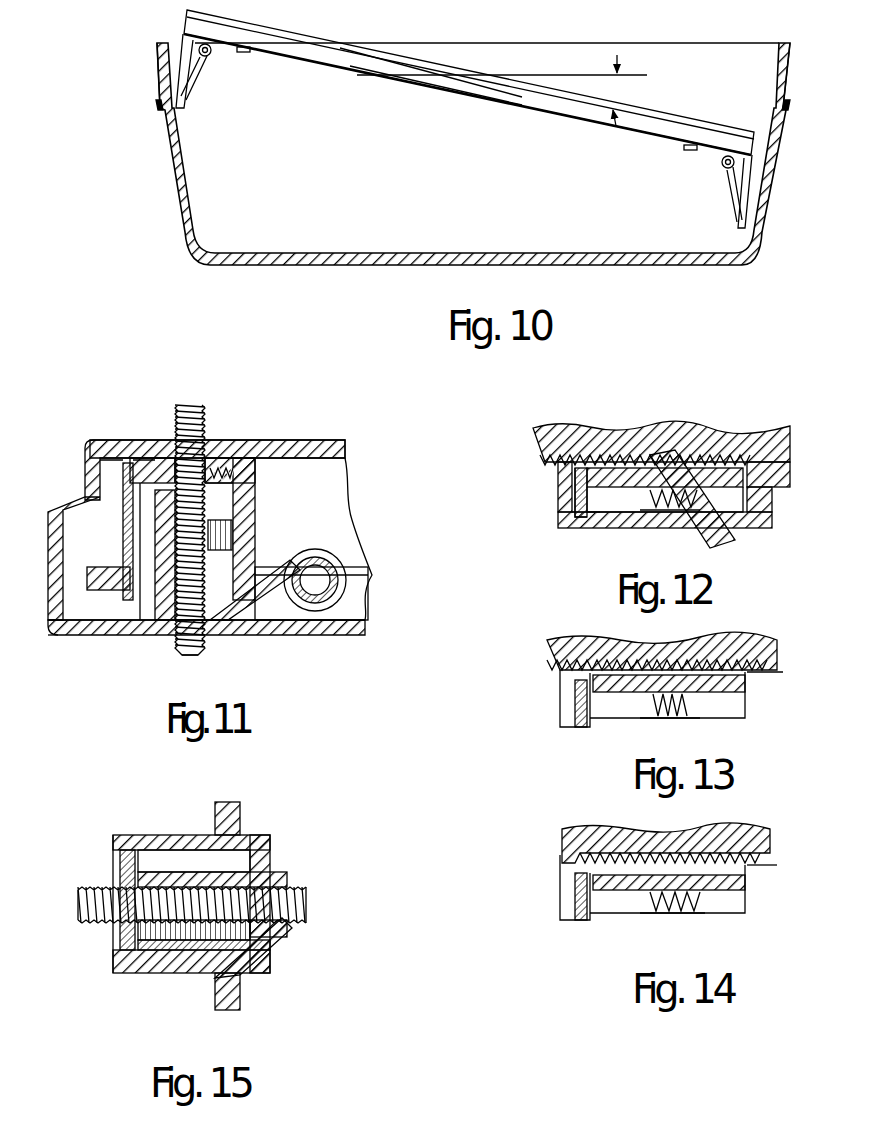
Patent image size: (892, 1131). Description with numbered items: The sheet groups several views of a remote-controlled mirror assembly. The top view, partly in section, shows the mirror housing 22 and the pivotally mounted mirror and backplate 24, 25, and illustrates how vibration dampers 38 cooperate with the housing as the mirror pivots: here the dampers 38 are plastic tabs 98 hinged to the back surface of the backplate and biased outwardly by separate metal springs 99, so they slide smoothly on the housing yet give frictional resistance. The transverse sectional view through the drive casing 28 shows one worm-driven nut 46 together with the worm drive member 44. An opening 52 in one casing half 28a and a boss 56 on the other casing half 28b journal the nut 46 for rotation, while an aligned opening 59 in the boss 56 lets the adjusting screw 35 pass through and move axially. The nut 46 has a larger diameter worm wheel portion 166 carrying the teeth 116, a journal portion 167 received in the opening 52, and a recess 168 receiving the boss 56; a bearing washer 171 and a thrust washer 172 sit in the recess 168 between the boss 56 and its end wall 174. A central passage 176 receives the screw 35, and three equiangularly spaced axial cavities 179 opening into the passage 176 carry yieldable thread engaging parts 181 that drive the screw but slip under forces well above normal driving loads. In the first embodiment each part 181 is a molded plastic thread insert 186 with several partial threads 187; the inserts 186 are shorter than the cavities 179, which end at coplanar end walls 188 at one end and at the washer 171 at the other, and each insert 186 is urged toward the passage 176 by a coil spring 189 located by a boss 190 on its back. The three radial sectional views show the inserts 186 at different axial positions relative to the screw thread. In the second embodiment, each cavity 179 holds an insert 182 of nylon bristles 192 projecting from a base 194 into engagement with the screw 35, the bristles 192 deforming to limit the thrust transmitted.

In FIG. 10, the container body 22 is at (708, 266).
In FIG. 10, the lid 24 is at (310, 33).
In FIG. 10, the lid panel 25 is at (547, 118).
In FIG. 10, the damper 38 is at (178, 57).
In FIG. 10, the plastic tab 98 is at (170, 78).
In FIG. 10, the metal spring 99 is at (193, 73).
In FIG. 11, the casing 28 is at (305, 433).
In FIG. 11, the casing half 28a is at (93, 640).
In FIG. 11, the housing side wall 28b is at (85, 457).
In FIG. 11, the adjusting screw 35 is at (190, 405).
In FIG. 12, the adjusting screw 35 is at (773, 428).
In FIG. 15, the adjusting screw 35 is at (300, 890).
In FIG. 11, the drive member 44 is at (343, 548).
In FIG. 11, the driven nut 46 is at (262, 522).
In FIG. 12, the driven nut 46 is at (778, 527).
In FIG. 15, the driven nut 46 is at (254, 980).
In FIG. 11, the opening 52 is at (163, 640).
In FIG. 11, the boss 56 is at (250, 460).
In FIG. 11, the opening 59 is at (207, 467).
In FIG. 11, the teeth 116 is at (58, 636).
In FIG. 11, the worm wheel portion 166 is at (113, 566).
In FIG. 11, the journal portion 167 is at (213, 643).
In FIG. 11, the recess 168 is at (143, 440).
In FIG. 11, the bearing washer 171 is at (128, 497).
In FIG. 12, the bearing washer 171 is at (575, 503).
In FIG. 13, the bearing washer 171 is at (577, 708).
In FIG. 14, the bearing washer 171 is at (577, 905).
In FIG. 11, the thrust washer 172 is at (217, 470).
In FIG. 12, the thrust washer 172 is at (575, 485).
In FIG. 11, the end wall 174 is at (256, 477).
In FIG. 11, the central passage 176 is at (190, 652).
In FIG. 11, the cavity 179 is at (240, 585).
In FIG. 12, the cavity 179 is at (595, 527).
In FIG. 15, the cavity 179 is at (183, 957).
In FIG. 11, the thread engaging part 181 is at (290, 633).
In FIG. 15, the insert 182 is at (140, 960).
In FIG. 11, the thread insert 186 is at (213, 505).
In FIG. 12, the thread insert 186 is at (603, 503).
In FIG. 13, the thread insert 186 is at (627, 692).
In FIG. 14, the thread insert 186 is at (635, 895).
In FIG. 12, the partial threads 187 is at (670, 428).
In FIG. 12, the end wall 188 is at (745, 493).
In FIG. 13, the end wall 188 is at (743, 705).
In FIG. 14, the end wall 188 is at (743, 898).
In FIG. 12, the spring 189 is at (665, 527).
In FIG. 13, the spring 189 is at (693, 712).
In FIG. 14, the spring 189 is at (705, 900).
In FIG. 12, the boss 190 is at (727, 540).
In FIG. 15, the nylon bristles 192 is at (193, 963).
In FIG. 15, the base 194 is at (273, 950).